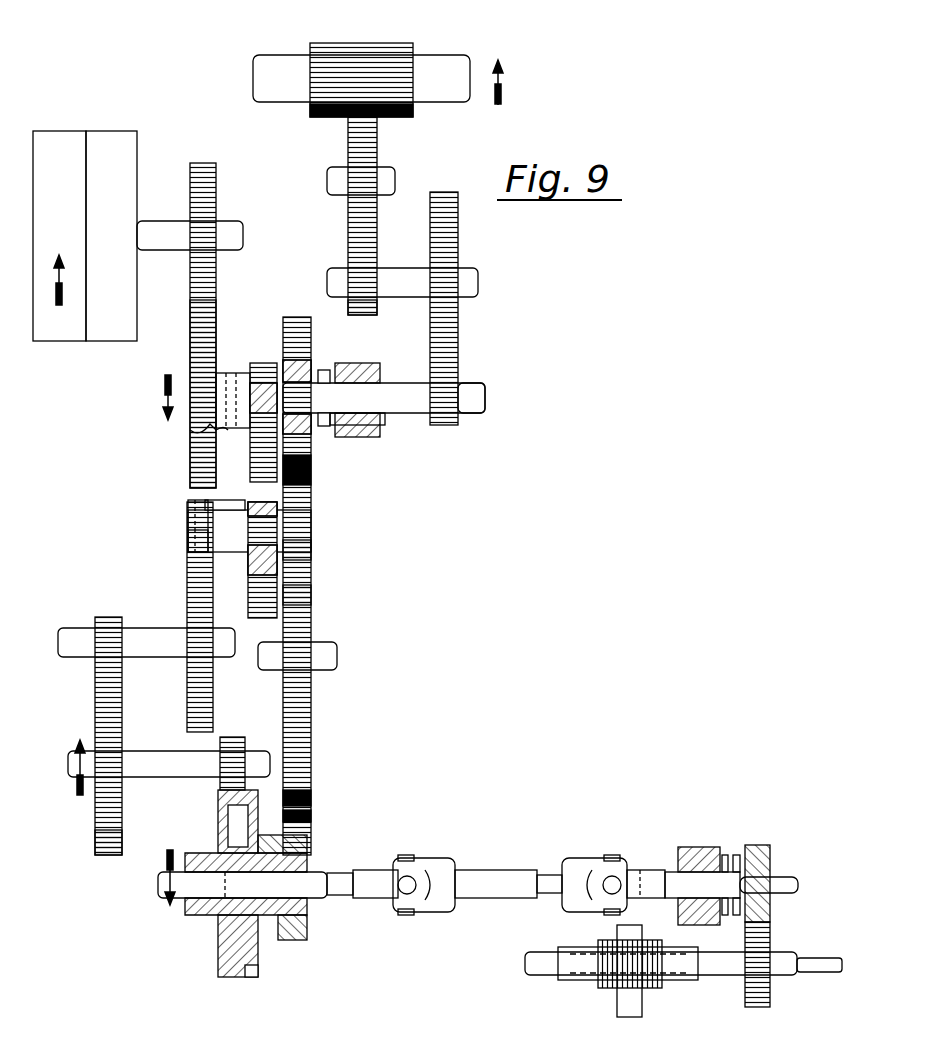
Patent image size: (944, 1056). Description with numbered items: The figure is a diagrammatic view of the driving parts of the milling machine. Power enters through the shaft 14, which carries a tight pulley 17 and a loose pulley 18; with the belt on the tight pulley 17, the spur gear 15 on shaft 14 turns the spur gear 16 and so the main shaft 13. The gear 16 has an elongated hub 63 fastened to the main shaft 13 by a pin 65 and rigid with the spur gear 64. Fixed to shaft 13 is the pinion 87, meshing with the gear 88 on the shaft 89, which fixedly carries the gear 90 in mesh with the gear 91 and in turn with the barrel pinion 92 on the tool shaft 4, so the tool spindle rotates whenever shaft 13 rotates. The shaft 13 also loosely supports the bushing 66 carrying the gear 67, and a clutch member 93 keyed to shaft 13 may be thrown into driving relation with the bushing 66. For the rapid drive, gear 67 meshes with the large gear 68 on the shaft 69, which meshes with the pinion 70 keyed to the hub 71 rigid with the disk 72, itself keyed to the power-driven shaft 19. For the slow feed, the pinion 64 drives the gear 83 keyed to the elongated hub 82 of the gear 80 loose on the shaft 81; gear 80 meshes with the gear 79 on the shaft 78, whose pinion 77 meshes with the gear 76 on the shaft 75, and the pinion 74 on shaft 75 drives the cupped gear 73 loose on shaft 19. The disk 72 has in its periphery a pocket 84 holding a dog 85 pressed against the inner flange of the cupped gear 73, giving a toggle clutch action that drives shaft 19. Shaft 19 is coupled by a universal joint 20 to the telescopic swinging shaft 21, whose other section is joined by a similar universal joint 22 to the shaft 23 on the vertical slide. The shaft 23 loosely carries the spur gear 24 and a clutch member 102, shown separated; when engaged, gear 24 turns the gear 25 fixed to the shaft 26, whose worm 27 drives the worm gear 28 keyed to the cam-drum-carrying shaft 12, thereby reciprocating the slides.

The tool shaft 4 is at (450, 96).
The cam-drum-carrying shaft 12 is at (617, 1002).
The main shaft 13 is at (408, 413).
The shaft 14 is at (230, 224).
The spur gear 15 is at (216, 274).
The spur gear 16 is at (190, 348).
The tight pulley 17 is at (68, 139).
The loose pulley 18 is at (112, 132).
The power-driven shaft 19 is at (362, 870).
The universal joint 20 is at (416, 858).
The telescopic swinging shaft 21 is at (496, 868).
The universal joint 22 is at (586, 860).
The shaft 23 is at (648, 866).
The spur gear 24 is at (769, 860).
The gear 25 is at (771, 946).
The shaft 26 is at (782, 976).
The worm 27 is at (610, 948).
The worm gear 28 is at (674, 980).
The elongated hub 63 is at (240, 366).
The spur gear 64 is at (282, 326).
The pin 65 is at (215, 430).
The bushing 66 is at (322, 370).
The gear 67 is at (311, 467).
The large gear 68 is at (311, 555).
The shaft 69 is at (321, 642).
The pinion 70 is at (292, 846).
The hub 71 is at (306, 907).
The disk 72 is at (228, 824).
The cupped gear 73 is at (232, 924).
The pinion 74 is at (229, 737).
The shaft 75 is at (195, 776).
The gear 76 is at (108, 856).
The pinion 77 is at (117, 618).
The shaft 78 is at (155, 658).
The gear 79 is at (190, 598).
The gear 80 is at (193, 508).
The shaft 81 is at (190, 538).
The elongated hub 82 is at (305, 522).
The gear 83 is at (311, 596).
The pocket 84 is at (300, 799).
The dog 85 is at (311, 812).
The pinion 87 is at (457, 426).
The gear 88 is at (458, 326).
The shaft 89 is at (478, 272).
The gear 90 is at (362, 314).
The gear 91 is at (368, 214).
The barrel pinion 92 is at (390, 46).
The clutch member 93 is at (376, 426).
The clutch member 102 is at (716, 844).